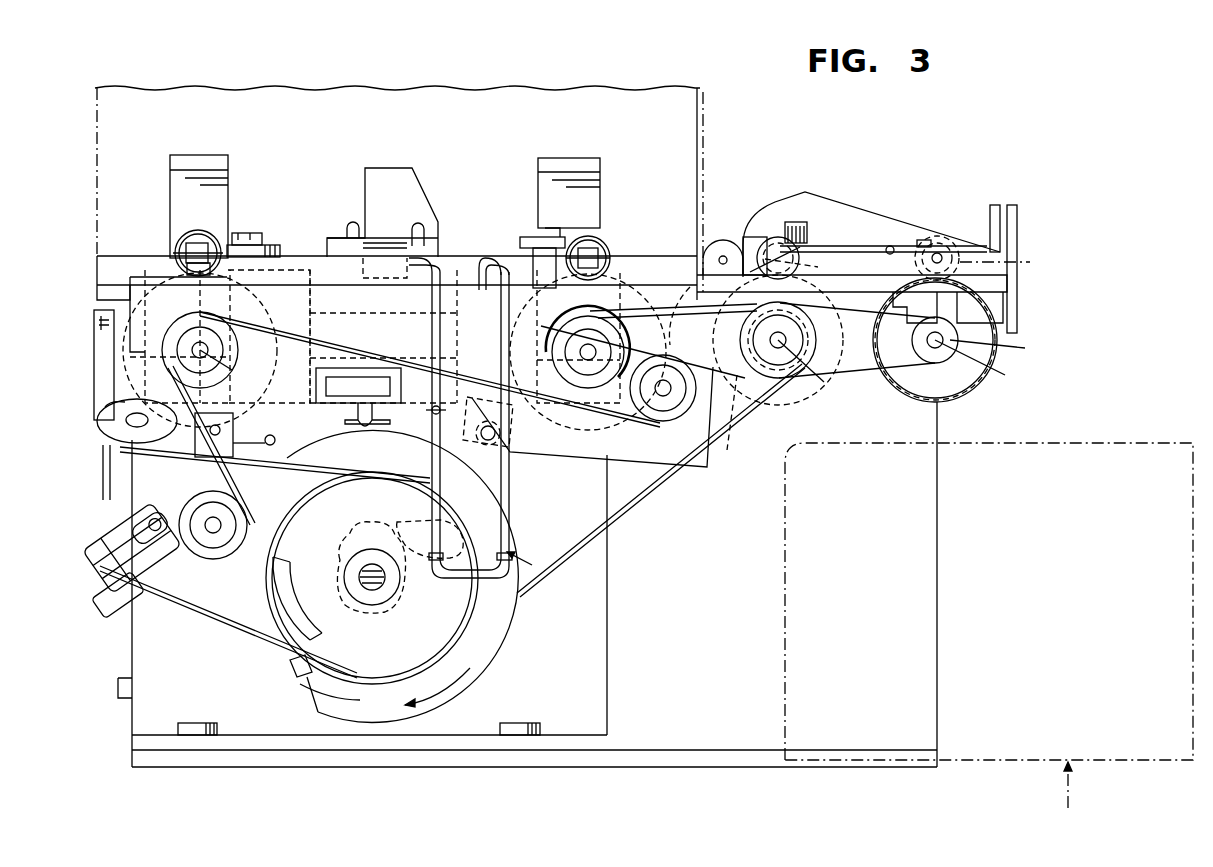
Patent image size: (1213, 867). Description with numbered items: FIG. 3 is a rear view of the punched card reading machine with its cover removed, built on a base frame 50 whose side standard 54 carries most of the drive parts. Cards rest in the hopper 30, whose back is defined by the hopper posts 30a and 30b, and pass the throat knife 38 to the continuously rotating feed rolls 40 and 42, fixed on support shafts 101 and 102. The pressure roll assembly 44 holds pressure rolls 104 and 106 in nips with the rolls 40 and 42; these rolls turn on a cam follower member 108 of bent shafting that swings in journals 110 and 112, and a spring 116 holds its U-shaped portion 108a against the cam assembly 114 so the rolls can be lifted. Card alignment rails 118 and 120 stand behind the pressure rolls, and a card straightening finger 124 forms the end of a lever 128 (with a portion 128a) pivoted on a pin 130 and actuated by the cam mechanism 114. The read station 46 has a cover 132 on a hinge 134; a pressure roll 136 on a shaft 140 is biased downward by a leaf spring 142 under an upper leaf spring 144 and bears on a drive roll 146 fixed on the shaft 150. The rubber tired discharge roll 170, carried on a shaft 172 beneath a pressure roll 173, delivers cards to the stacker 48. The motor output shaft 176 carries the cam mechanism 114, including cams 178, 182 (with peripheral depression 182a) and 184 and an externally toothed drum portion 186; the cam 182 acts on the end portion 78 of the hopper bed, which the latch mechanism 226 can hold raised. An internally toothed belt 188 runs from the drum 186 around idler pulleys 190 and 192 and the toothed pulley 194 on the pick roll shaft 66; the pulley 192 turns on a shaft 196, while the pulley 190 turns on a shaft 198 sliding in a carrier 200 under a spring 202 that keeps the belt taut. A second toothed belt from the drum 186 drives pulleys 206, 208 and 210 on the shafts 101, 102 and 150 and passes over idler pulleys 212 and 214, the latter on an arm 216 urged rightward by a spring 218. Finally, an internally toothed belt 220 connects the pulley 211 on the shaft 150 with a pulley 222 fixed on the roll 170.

The document card hopper 30 is at (88, 170).
The hopper post 30a is at (198, 154).
The hopper post 30b is at (570, 157).
The throat knife 38 is at (420, 192).
The feed roll 42 is at (612, 268).
The pressure roll assembly 44 is at (538, 548).
The read station 46 is at (852, 192).
The stacker 48 is at (989, 638).
The base frame 50 is at (680, 750).
The standard 54 is at (150, 705).
The shaft 66 is at (130, 318).
The end portion 78 is at (344, 426).
The support shaft 101 is at (230, 359).
The support shaft 102 is at (588, 345).
The pressure roll 104 is at (186, 240).
The pressure roll 106 is at (600, 240).
The cam follower member 108 is at (500, 262).
The U-shaped cam follower portion 108a is at (507, 552).
The journal 110 is at (288, 256).
The journal 112 is at (535, 236).
The cam assembly 114 is at (492, 672).
The spring 116 is at (418, 430).
The card alignment rail 118 is at (110, 262).
The card alignment rail 120 is at (452, 268).
The card straightening finger 124 is at (686, 285).
The lever 128 is at (588, 470).
The cam 128a is at (404, 520).
The pin 130 is at (500, 433).
The cover 132 is at (876, 208).
The hinge 134 is at (722, 252).
The pressure roll 136 is at (772, 236).
The shaft 140 is at (810, 265).
The leaf spring 142 is at (893, 246).
The upper leaf spring 144 is at (945, 240).
The drive roll 146 is at (778, 378).
The shaft 150 is at (816, 370).
The card discharge roll 170 is at (960, 392).
The inner pulley 172 is at (978, 353).
The pressure roll 173 is at (1015, 265).
The output shaft 176 is at (378, 582).
The cam 178 is at (360, 522).
The cam 182 is at (500, 623).
The peripheral depression 182a is at (298, 680).
The cam 184 is at (283, 562).
The drum portion 186 is at (300, 680).
The internally toothed belt 188 is at (185, 620).
The idler pulley 190 is at (113, 512).
The idler pulley 192 is at (112, 408).
The externally toothed pulley 194 is at (92, 330).
The shaft 196 is at (130, 422).
The shaft 198 is at (205, 545).
The carrier 200 is at (90, 552).
The spring 202 is at (100, 598).
The driven pulley 206 is at (235, 330).
The driven pulley 208 is at (568, 452).
The pulley 210 is at (768, 408).
The pulley 211 is at (736, 424).
The idler pulley 212 is at (668, 420).
The idler pulley 214 is at (186, 505).
The arm 216 is at (235, 475).
The spring 218 is at (248, 440).
The internally toothed belt 220 is at (868, 372).
The pulley 222 is at (996, 345).
The latch mechanism 226 is at (360, 366).
The feed roll 40 is at (264, 360).